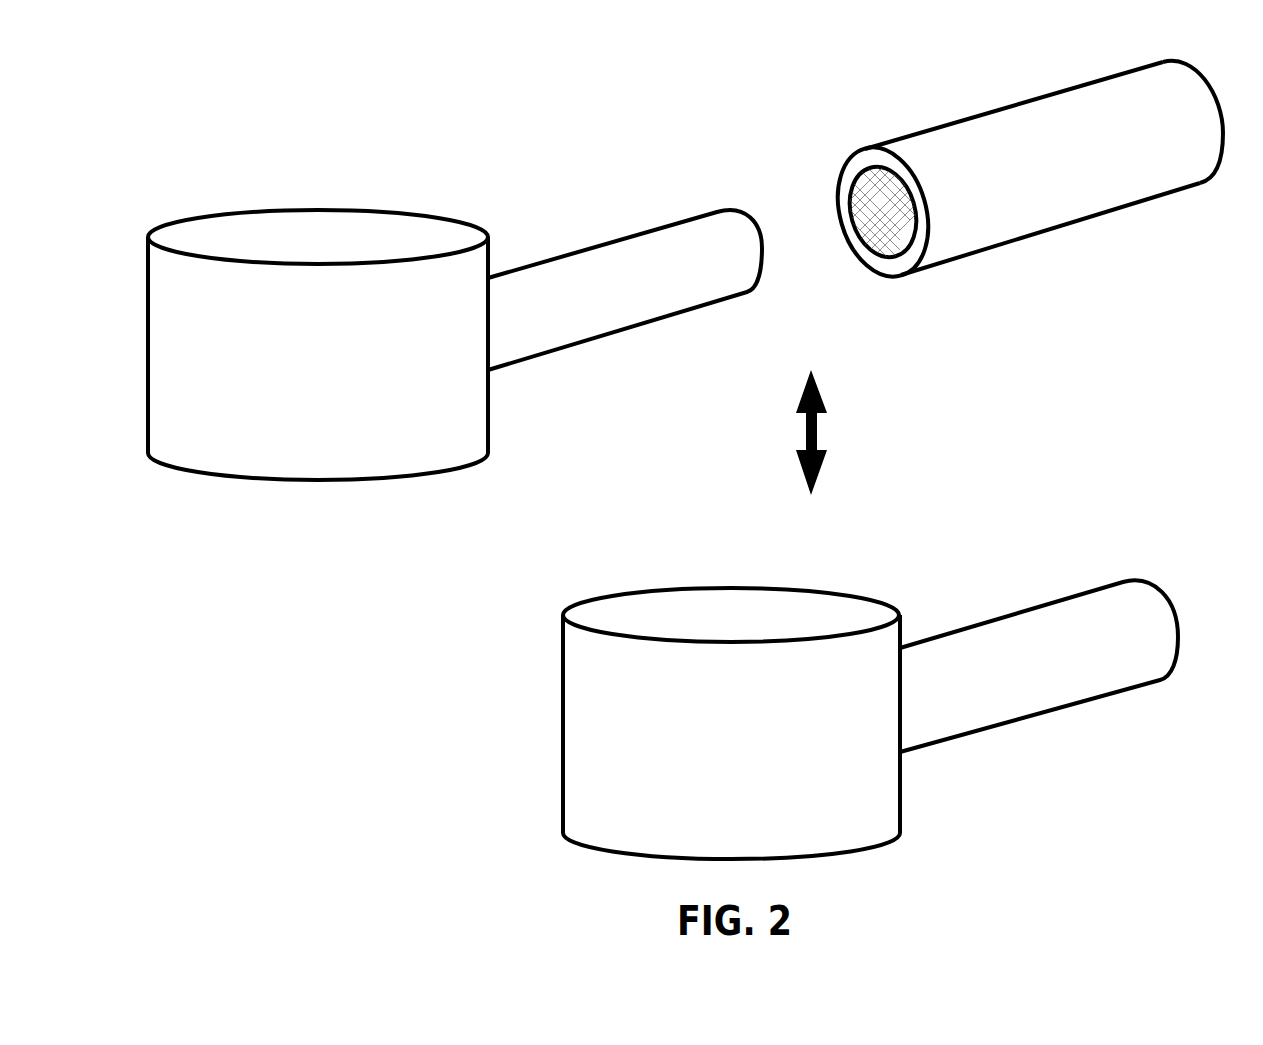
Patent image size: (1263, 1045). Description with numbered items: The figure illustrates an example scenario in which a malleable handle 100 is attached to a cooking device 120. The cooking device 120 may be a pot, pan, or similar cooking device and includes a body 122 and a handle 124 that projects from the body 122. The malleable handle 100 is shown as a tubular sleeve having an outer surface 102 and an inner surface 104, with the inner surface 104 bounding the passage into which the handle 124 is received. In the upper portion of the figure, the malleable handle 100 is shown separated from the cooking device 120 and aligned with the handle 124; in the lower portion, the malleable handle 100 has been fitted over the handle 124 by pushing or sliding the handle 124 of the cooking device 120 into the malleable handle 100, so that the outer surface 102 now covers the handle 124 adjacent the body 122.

The malleable handle 100 is at (969, 382).
The outer surface 102 is at (1081, 172).
The inner surface 104 is at (715, 255).
The cooking device 120 is at (524, 497).
The body 122 is at (331, 362).
The handle 124 is at (617, 306).